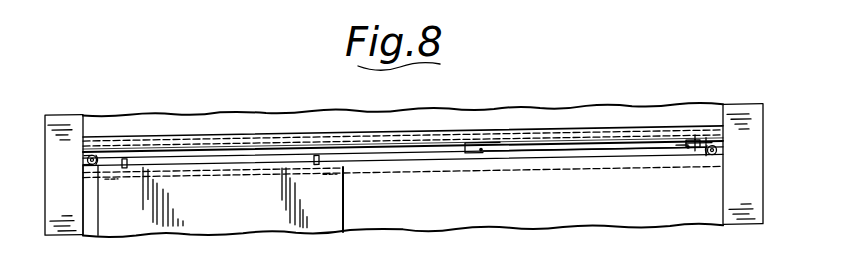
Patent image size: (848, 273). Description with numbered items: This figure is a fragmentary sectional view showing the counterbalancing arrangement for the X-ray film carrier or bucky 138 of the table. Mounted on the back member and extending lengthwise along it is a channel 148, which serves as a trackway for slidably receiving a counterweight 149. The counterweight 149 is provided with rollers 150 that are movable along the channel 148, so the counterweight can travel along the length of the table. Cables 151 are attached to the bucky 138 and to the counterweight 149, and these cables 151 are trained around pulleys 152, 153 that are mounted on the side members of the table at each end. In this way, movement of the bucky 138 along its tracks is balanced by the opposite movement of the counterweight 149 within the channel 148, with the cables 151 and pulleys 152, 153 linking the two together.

The X-ray film carrier or bucky 138 is at (345, 213).
The channel 148 is at (433, 134).
The counterweight 149 is at (582, 147).
The rollers 150 is at (470, 140).
The cables 151 is at (347, 152).
The pulley 152 is at (721, 147).
The pulley 153 is at (88, 158).